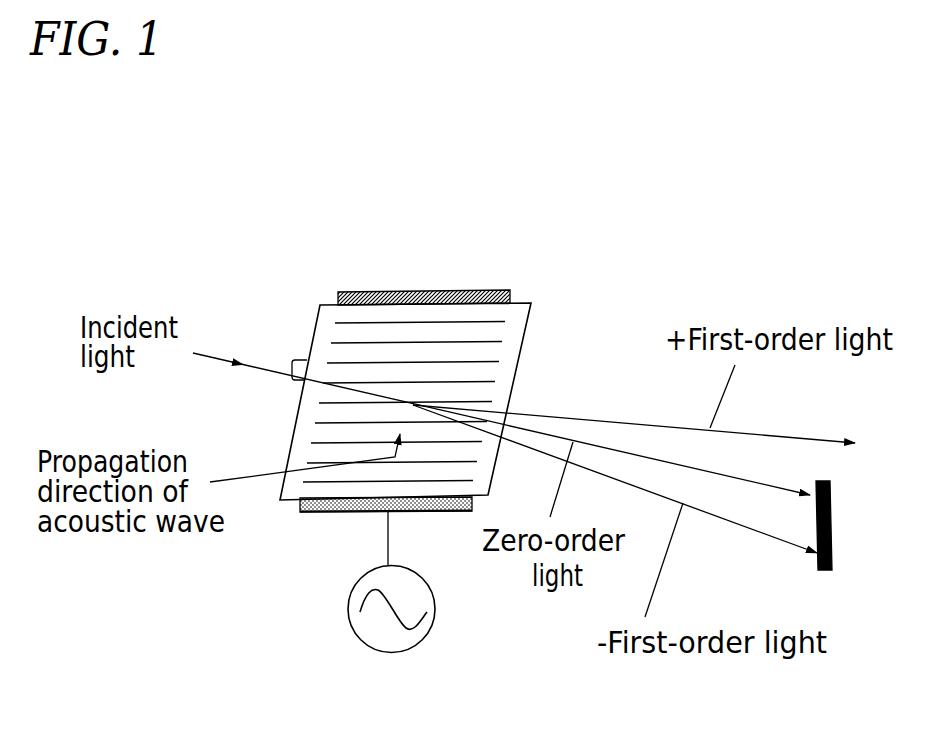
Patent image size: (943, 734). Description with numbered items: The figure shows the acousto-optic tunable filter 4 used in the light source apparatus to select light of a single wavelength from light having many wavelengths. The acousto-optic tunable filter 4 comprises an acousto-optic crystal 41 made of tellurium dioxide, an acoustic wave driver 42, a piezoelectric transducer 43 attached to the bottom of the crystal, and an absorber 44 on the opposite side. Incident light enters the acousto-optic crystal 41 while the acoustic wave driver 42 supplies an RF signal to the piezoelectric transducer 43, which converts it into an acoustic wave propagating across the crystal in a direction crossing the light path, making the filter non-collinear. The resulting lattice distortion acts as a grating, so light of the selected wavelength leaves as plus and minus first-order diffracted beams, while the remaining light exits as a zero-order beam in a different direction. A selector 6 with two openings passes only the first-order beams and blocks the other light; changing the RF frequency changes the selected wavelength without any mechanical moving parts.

The acousto-optic tunable filter 4 is at (365, 451).
The acousto-optic crystal 41 is at (320, 308).
The acoustic wave driver 42 is at (391, 610).
The piezoelectric transducer 43 is at (332, 515).
The absorber 44 is at (403, 290).
The selector 6 is at (848, 525).